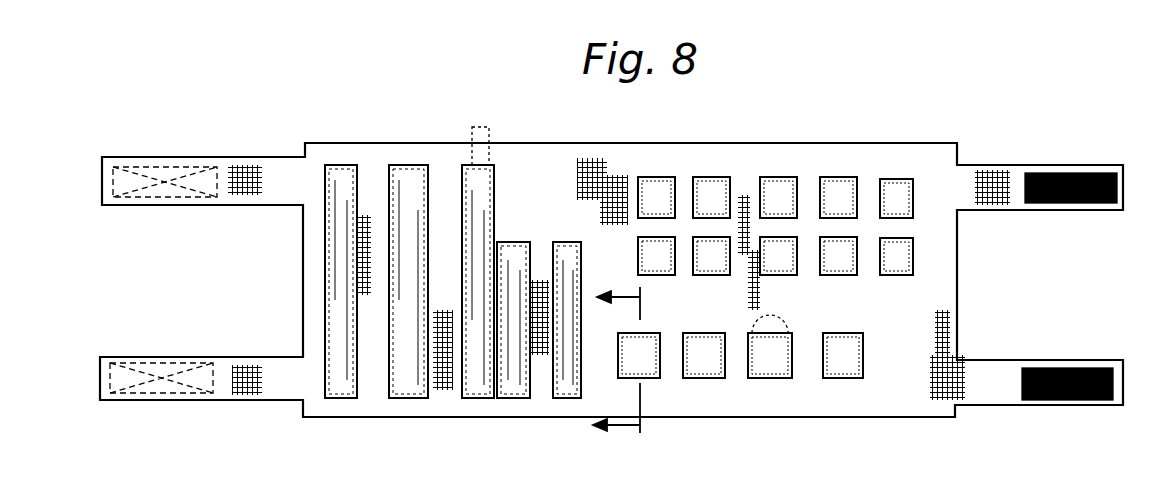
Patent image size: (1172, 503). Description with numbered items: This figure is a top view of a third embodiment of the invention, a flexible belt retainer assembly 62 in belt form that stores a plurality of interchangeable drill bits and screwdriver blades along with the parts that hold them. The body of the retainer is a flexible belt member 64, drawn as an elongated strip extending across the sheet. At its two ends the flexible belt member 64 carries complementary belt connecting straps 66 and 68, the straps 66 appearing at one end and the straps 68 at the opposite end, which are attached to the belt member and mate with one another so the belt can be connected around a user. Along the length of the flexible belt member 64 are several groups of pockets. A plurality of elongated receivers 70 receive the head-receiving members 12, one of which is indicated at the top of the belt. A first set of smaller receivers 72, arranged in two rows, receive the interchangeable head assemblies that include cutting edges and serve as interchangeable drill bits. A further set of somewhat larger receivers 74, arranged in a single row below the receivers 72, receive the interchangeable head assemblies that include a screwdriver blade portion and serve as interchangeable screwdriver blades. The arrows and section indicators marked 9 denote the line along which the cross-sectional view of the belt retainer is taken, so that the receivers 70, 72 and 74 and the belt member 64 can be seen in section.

The section line 9- 9 is at (633, 362).
The head-receiving member 12 is at (474, 140).
The flexible belt retainer assembly 62 is at (501, 125).
The flexible belt member 64 is at (584, 172).
The belt connecting strap 66 is at (178, 172).
The belt connecting strap 68 is at (1072, 203).
The receiver 70 is at (343, 170).
The receiver 72 is at (668, 178).
The receiver 74 is at (645, 352).